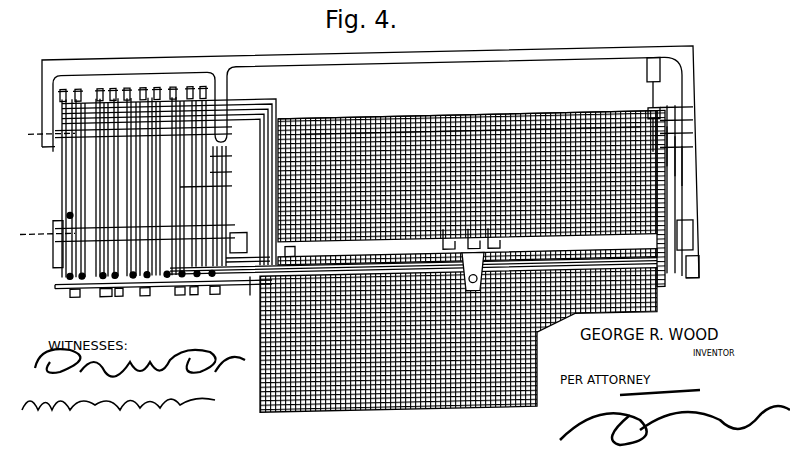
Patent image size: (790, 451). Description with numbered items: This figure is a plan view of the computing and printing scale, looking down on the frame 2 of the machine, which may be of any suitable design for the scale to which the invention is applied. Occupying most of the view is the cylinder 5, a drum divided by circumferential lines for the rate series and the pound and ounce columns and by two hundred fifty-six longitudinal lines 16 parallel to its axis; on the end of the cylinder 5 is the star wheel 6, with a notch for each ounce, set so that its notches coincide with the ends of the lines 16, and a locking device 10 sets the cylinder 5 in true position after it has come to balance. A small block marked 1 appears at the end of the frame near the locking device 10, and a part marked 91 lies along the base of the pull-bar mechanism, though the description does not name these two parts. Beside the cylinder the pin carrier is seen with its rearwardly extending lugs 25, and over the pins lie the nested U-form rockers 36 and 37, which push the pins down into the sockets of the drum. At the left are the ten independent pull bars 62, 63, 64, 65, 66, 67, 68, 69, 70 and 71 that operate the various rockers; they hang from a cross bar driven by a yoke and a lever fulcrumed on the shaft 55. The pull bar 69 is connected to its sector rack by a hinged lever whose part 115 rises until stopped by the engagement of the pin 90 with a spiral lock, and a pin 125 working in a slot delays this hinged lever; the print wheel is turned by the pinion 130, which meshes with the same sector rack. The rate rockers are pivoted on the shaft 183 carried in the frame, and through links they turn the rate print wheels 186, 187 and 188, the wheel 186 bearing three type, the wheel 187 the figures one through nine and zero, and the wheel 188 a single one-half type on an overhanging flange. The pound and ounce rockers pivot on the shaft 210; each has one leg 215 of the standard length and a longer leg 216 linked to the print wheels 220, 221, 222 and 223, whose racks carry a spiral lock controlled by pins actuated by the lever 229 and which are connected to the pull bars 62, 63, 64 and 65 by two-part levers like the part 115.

The stop block 1 is at (653, 70).
The frame 2 is at (541, 67).
The cylinder 5 is at (524, 124).
The star wheel 6 is at (667, 194).
The locking device 10 is at (660, 108).
The lines 16 is at (648, 126).
The rearwardly extending lugs 25 is at (460, 134).
The U-form rocker 36 is at (229, 176).
The U-form rocker 37 is at (214, 191).
The shaft 55 is at (229, 161).
The pull bar 62 is at (63, 90).
The pull bar 63 is at (78, 90).
The pull bar 64 is at (100, 90).
The pull bar 65 is at (113, 90).
The pull bar 66 is at (127, 90).
The pull bar 67 is at (143, 90).
The pull bar 68 is at (157, 90).
The pull bar 69 is at (173, 90).
The pull bar 70 is at (190, 90).
The pull bar 71 is at (203, 90).
The pin 90 is at (67, 277).
The base plate 91 is at (60, 289).
The lever part 115 is at (62, 160).
The pin 125 is at (53, 92).
The pinion 130 is at (215, 280).
The shaft 183 is at (276, 124).
The rate print wheel 186 is at (175, 298).
The rate print wheel 187 is at (192, 298).
The rate print wheel 188 is at (214, 298).
The shaft 210 is at (240, 125).
The rocker leg 215 is at (330, 126).
The rocker leg 216 is at (72, 182).
The print wheel 220 is at (70, 296).
The print wheel 221 is at (100, 298).
The print wheel 222 is at (118, 298).
The print wheel 223 is at (142, 298).
The lever 229 is at (70, 216).